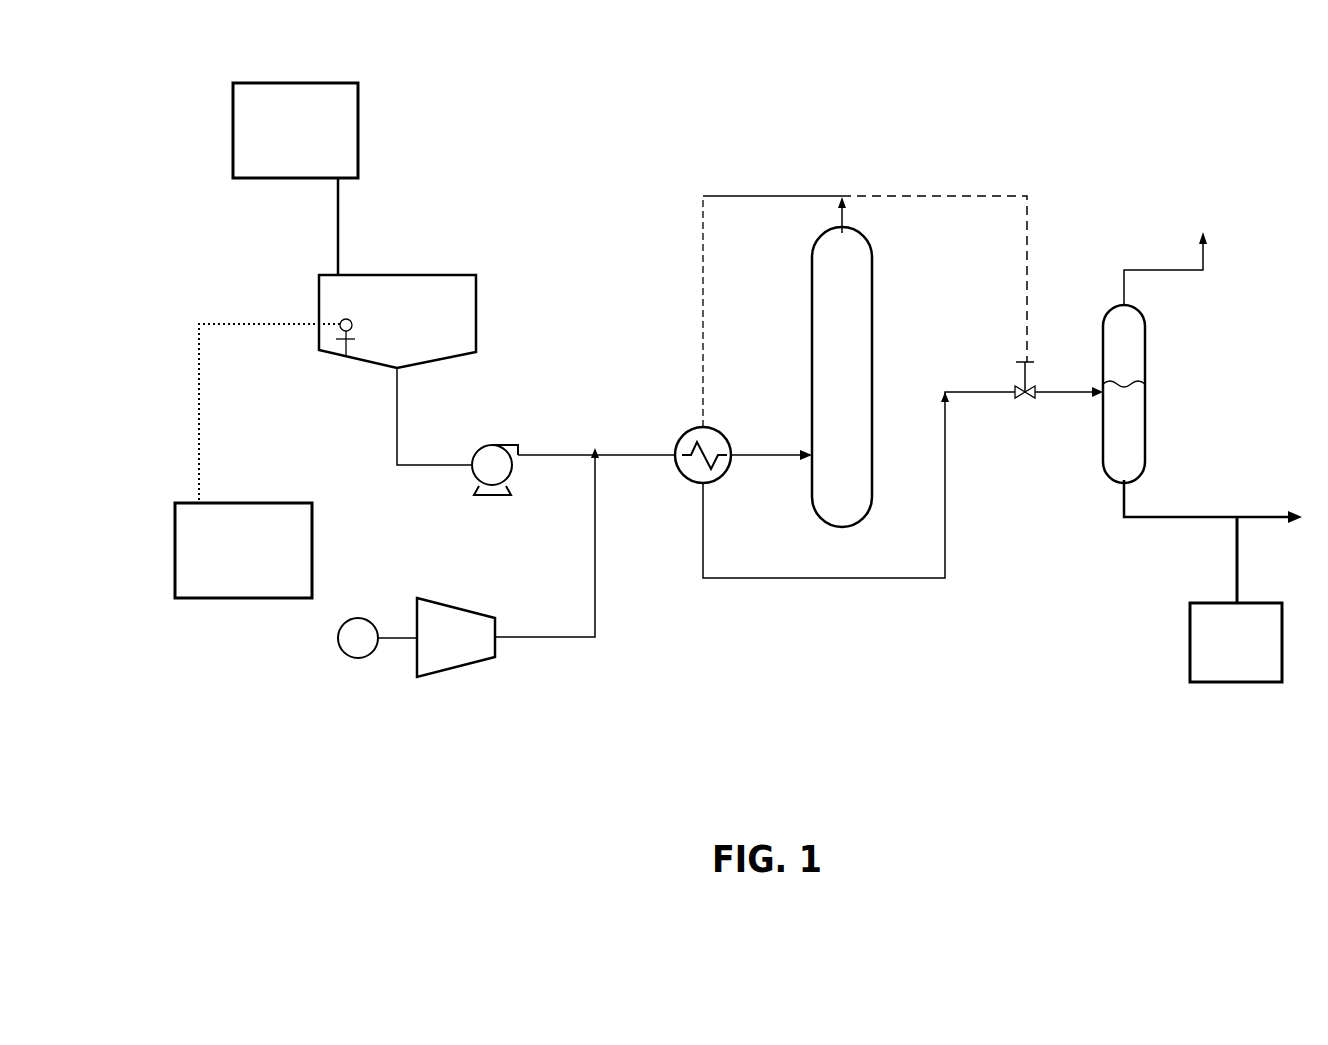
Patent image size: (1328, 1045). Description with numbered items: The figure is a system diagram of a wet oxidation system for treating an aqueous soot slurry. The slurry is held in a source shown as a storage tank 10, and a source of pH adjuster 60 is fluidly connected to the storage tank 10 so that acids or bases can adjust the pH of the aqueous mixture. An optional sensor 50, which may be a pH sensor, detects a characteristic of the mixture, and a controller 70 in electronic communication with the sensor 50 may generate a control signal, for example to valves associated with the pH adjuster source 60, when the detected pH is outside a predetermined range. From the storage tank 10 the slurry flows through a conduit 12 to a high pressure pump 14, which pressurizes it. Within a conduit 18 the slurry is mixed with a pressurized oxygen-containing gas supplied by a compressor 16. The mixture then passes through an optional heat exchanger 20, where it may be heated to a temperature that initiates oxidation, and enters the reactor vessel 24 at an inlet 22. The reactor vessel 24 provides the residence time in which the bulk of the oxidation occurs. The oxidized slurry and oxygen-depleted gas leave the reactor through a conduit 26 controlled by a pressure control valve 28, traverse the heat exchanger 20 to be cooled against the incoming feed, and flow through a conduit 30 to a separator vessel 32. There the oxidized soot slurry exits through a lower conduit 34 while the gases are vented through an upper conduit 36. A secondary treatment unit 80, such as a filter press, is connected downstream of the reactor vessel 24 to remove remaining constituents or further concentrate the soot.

The storage tank 10 is at (456, 313).
The conduit 12 is at (397, 410).
The high pressure pump 14 is at (492, 452).
The compressor 16 is at (455, 628).
The conduit 18 is at (636, 452).
The heat exchanger 20 is at (690, 432).
The reactor inlet 22 is at (803, 451).
The reactor vessel 24 is at (852, 315).
The conduit 26 is at (780, 195).
The pressure control valve 28 is at (1030, 362).
The conduit 30 is at (770, 578).
The separator vessel 32 is at (1130, 348).
The lower conduit 34 is at (1155, 520).
The upper conduit 36 is at (1160, 268).
The sensor 50 is at (342, 329).
The source of pH adjuster 60 is at (287, 100).
The controller 70 is at (217, 565).
The secondary treatment unit 80 is at (1213, 632).